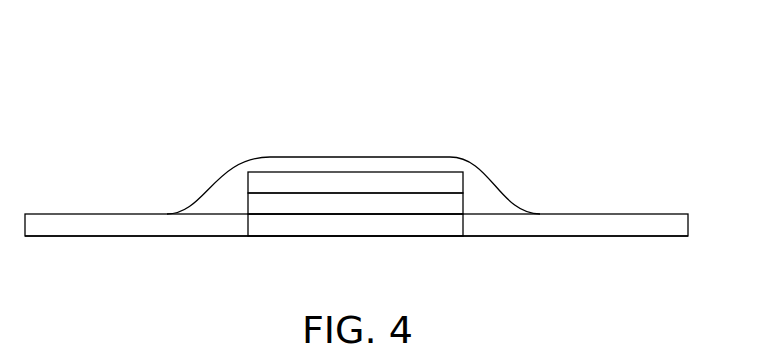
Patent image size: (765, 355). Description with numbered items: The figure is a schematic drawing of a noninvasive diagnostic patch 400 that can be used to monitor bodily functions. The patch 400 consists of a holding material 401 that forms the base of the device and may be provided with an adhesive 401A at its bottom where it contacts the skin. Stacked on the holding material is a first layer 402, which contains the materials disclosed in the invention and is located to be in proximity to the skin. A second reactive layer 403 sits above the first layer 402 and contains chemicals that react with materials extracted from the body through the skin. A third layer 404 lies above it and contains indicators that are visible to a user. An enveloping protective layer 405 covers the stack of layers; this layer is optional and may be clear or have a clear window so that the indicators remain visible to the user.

The noninvasive diagnostic patch 400 is at (553, 143).
The holding material 401 is at (75, 212).
The adhesive 401A is at (128, 237).
The first layer 402 is at (385, 237).
The second reactive layer 403 is at (413, 205).
The third layer 404 is at (309, 182).
The enveloping protective layer 405 is at (223, 183).